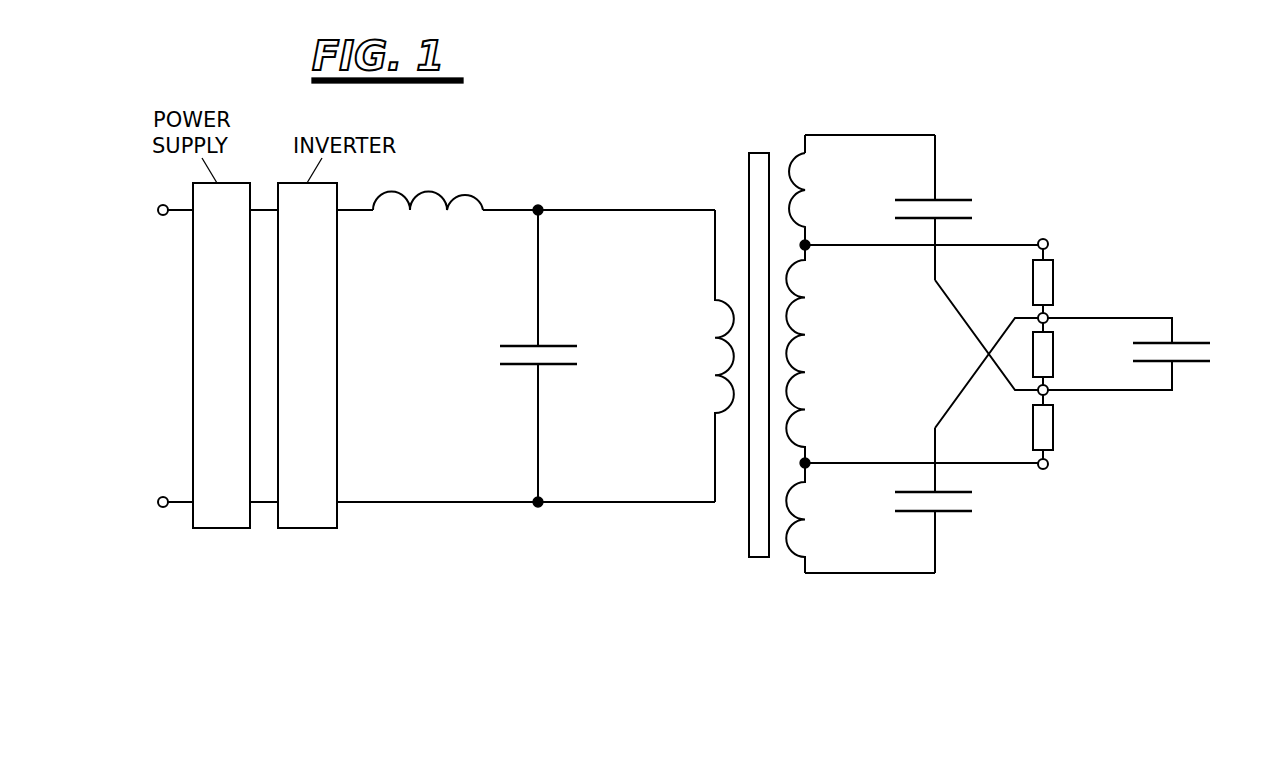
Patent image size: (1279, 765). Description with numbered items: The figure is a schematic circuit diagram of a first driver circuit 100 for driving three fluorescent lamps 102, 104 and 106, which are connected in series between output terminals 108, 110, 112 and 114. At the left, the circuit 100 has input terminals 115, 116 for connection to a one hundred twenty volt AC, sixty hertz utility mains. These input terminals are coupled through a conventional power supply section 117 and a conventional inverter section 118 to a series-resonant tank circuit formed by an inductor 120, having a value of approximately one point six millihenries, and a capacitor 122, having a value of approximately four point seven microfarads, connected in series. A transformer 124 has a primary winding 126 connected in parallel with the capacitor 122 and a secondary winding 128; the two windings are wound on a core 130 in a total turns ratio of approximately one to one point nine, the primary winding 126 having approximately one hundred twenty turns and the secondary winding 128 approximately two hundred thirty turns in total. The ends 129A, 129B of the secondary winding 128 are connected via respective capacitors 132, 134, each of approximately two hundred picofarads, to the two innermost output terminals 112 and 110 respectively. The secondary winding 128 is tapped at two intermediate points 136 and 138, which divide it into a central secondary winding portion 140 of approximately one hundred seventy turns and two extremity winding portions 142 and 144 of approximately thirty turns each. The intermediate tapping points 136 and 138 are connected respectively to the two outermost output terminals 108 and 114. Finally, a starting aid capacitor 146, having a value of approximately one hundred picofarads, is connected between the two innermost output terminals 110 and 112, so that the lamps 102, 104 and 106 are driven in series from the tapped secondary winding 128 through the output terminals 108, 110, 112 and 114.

The first driver circuit 100 is at (355, 632).
The fluorescent lamp 102 is at (1053, 280).
The fluorescent lamp 104 is at (1053, 357).
The fluorescent lamp 106 is at (1053, 430).
The output terminal 108 is at (1050, 242).
The output terminal 110 is at (1048, 315).
The output terminal 112 is at (1048, 392).
The output terminal 114 is at (1050, 467).
The input terminal 115 is at (159, 215).
The input terminal 116 is at (159, 497).
The power supply section 117 is at (221, 343).
The inverter section 118 is at (307, 343).
The inductor 120 is at (412, 214).
The capacitor 122 is at (518, 367).
The transformer 124 is at (747, 369).
The primary winding 126 is at (715, 338).
The secondary winding 128 is at (797, 95).
The end of secondary winding 129A is at (807, 133).
The end of secondary winding 129B is at (808, 575).
The core 130 is at (762, 152).
The capacitor 132 is at (958, 197).
The capacitor 134 is at (960, 512).
The intermediate tapping point 136 is at (809, 250).
The intermediate tapping point 138 is at (809, 460).
The central secondary winding portion 140 is at (803, 373).
The extremity winding portion 142 is at (803, 192).
The extremity winding portion 144 is at (803, 518).
The starting aid capacitor 146 is at (1198, 337).